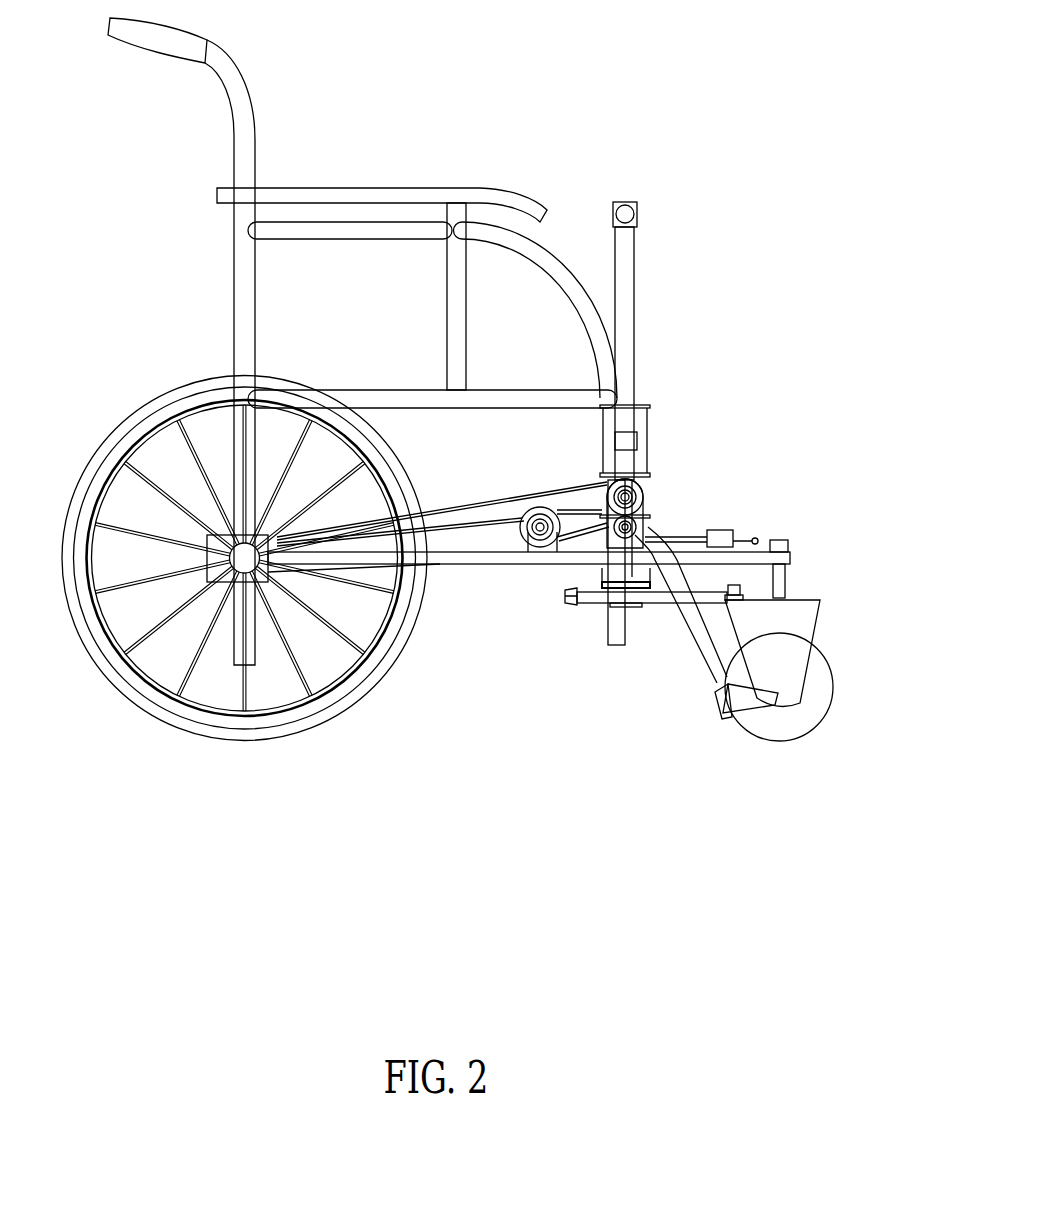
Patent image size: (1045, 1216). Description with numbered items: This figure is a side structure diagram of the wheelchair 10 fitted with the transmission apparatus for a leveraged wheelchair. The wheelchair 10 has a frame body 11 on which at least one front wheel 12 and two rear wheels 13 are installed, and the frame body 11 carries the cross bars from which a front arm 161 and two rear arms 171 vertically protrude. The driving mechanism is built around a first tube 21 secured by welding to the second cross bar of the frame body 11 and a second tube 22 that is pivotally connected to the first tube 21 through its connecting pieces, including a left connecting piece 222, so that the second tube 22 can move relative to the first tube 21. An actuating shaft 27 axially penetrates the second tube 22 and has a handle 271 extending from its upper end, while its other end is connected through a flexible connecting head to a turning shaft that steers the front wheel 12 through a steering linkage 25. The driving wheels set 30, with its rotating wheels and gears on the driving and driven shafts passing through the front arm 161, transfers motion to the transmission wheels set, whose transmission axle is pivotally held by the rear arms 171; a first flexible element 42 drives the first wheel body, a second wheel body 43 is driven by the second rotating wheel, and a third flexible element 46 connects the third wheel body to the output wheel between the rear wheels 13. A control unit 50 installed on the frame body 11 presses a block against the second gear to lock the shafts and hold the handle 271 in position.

The wheelchair 10 is at (212, 255).
The frame body 11 is at (447, 566).
The front wheel 12 is at (820, 705).
The rear wheel 13 is at (215, 727).
The first tube 21 is at (632, 578).
The second tube 22 is at (643, 427).
The steering linkage 25 is at (655, 607).
The actuating shaft 27 is at (628, 318).
The handle 271 is at (625, 208).
The driving wheels set 30 is at (541, 483).
The first flexible element 42 is at (567, 566).
The second wheel body 43 is at (530, 505).
The third flexible element 46 is at (475, 507).
The control unit 50 is at (740, 519).
The front arm 161 is at (615, 548).
The rear arm 171 is at (527, 553).
The left connecting piece 222 is at (618, 463).